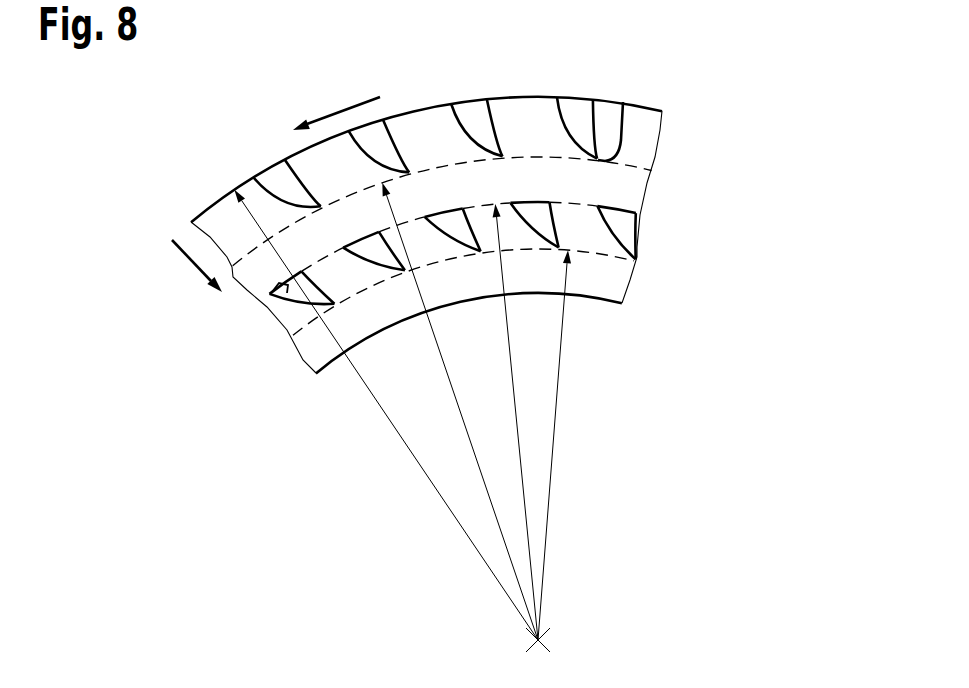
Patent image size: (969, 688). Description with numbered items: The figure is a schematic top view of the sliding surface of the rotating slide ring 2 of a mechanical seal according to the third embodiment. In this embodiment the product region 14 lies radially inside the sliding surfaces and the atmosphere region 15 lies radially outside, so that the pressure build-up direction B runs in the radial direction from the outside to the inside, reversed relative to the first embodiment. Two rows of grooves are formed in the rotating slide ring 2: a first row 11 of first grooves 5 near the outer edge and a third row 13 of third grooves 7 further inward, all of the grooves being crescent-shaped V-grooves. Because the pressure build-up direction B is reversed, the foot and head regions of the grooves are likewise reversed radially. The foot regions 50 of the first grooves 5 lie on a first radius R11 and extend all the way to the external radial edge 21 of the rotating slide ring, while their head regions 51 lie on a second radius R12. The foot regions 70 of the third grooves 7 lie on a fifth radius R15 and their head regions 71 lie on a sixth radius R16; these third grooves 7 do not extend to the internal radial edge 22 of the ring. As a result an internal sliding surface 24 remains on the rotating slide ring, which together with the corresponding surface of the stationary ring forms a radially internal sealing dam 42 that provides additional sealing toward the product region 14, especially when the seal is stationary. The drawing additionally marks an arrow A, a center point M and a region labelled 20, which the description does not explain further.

The rotating slide ring 2 is at (204, 127).
The atmosphere region 15 is at (248, 105).
The product region 14 is at (628, 408).
The first grooves 5 is at (283, 187).
The foot regions of the first grooves 50 is at (452, 103).
The head regions of the first grooves 51 is at (623, 102).
The flow channel 20 is at (475, 182).
The external radial edge of the rotating slide ring 21 is at (527, 97).
The internal radial edge of the rotating slide ring 22 is at (543, 293).
The internal sliding surface 24 is at (625, 278).
The third grooves 7 is at (290, 294).
The foot regions of the third grooves 70 is at (270, 292).
The head regions of the third grooves 71 is at (343, 313).
The first row of first grooves 11 is at (689, 145).
The third row of third grooves 13 is at (666, 245).
The radially internal sealing dam 42 is at (657, 283).
The direction of rotation A is at (330, 113).
The pressure build-up direction B is at (193, 262).
The center point / axis M is at (548, 640).
The first radius R11 is at (380, 407).
The second radius R12 is at (480, 468).
The fifth radius R15 is at (525, 503).
The sixth radius R16 is at (553, 453).